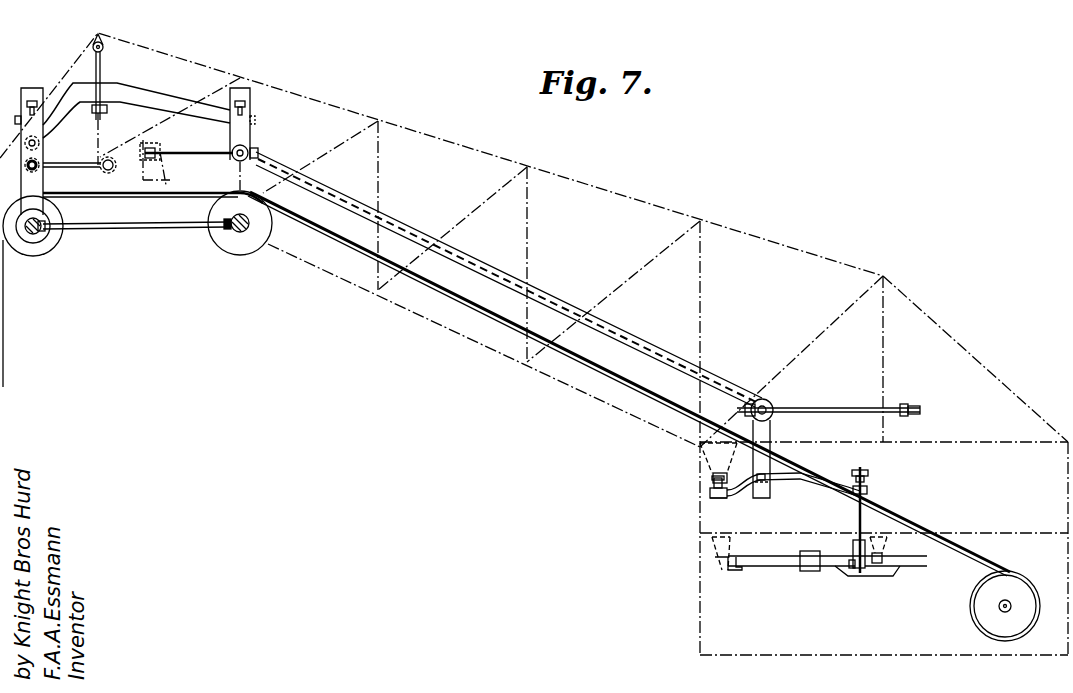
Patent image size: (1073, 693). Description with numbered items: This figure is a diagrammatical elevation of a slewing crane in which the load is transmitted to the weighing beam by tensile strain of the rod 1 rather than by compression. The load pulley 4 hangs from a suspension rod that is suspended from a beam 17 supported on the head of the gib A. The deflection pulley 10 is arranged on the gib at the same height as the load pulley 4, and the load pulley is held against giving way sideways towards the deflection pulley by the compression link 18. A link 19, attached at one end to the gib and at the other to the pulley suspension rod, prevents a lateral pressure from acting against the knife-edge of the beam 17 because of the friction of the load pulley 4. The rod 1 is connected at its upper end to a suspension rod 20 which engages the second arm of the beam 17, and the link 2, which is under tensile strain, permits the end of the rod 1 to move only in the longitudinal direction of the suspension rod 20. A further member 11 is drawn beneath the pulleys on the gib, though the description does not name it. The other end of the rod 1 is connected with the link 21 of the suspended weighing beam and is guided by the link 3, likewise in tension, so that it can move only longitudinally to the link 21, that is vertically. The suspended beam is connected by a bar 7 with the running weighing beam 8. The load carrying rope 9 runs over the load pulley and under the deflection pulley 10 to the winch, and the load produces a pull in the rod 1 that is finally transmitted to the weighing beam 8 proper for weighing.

The gib A is at (405, 128).
The rod 1 is at (553, 300).
The link 2 is at (190, 157).
The link 3 is at (805, 410).
The load pulley 4 is at (35, 250).
The bar 7 is at (857, 521).
The weighing beam 8 is at (783, 563).
The rope 9 is at (2, 328).
The deflection pulley 10 is at (238, 246).
The lower rod 11 is at (117, 197).
The beam 17 is at (137, 92).
The compression link 18 is at (157, 228).
The link 19 is at (69, 163).
The suspension rod 20 is at (250, 139).
The link 21 is at (772, 443).